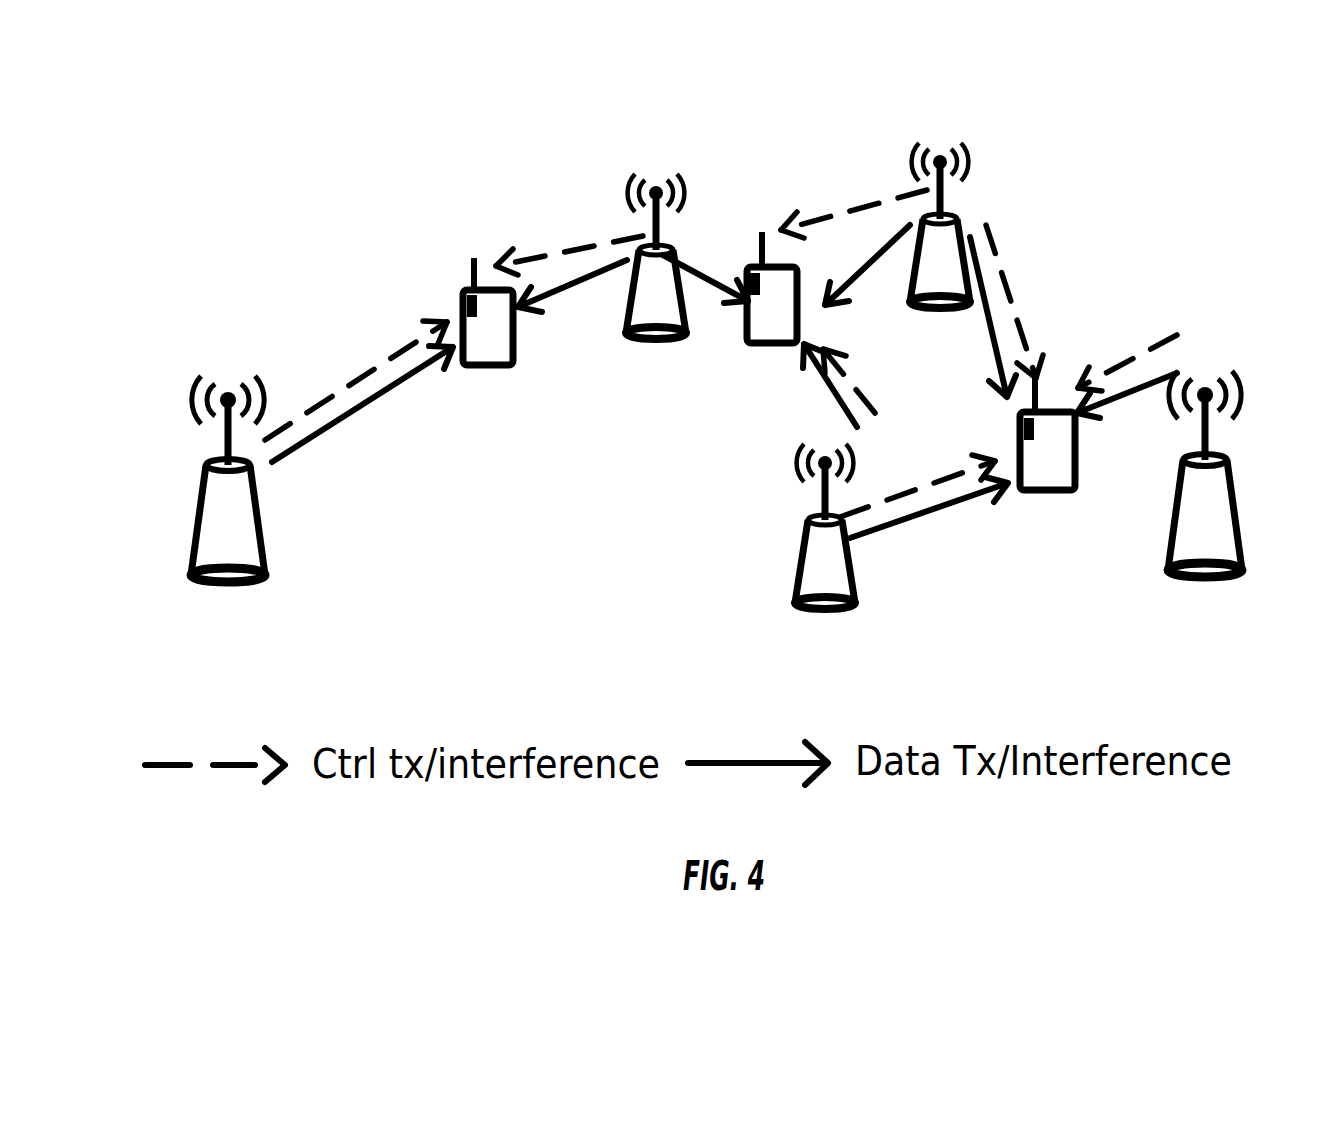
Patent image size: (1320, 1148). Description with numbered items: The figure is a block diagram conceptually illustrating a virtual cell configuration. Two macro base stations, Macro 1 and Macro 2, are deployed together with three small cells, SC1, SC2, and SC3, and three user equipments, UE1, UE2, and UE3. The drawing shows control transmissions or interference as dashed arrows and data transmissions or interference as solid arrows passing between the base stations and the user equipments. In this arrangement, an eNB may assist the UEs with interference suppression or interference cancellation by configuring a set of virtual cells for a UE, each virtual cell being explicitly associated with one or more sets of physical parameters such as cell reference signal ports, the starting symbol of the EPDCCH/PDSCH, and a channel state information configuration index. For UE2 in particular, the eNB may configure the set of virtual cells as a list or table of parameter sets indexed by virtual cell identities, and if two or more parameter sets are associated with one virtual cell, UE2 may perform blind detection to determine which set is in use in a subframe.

The macro base station Macro1 is at (192, 580).
The macro base station Macro2 is at (1177, 577).
The small cell SC1 is at (624, 337).
The small cell SC2 is at (913, 305).
The small cell SC3 is at (802, 610).
The UE UE1 is at (515, 355).
The UE UE2 is at (748, 343).
The UE UE3 is at (1075, 468).